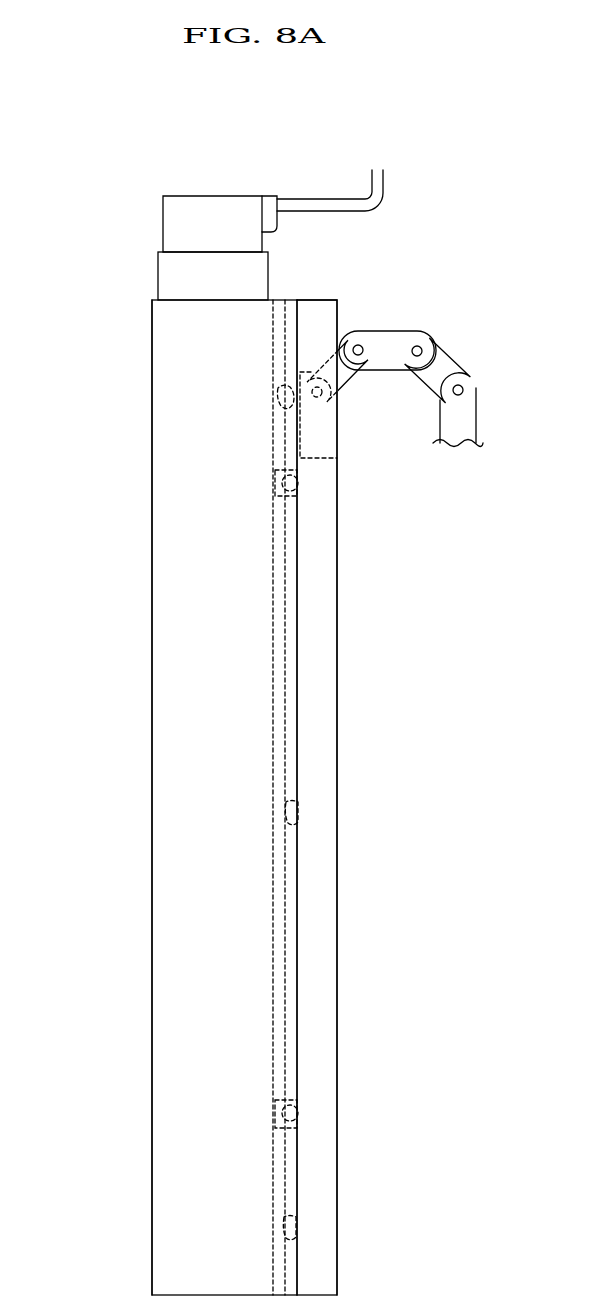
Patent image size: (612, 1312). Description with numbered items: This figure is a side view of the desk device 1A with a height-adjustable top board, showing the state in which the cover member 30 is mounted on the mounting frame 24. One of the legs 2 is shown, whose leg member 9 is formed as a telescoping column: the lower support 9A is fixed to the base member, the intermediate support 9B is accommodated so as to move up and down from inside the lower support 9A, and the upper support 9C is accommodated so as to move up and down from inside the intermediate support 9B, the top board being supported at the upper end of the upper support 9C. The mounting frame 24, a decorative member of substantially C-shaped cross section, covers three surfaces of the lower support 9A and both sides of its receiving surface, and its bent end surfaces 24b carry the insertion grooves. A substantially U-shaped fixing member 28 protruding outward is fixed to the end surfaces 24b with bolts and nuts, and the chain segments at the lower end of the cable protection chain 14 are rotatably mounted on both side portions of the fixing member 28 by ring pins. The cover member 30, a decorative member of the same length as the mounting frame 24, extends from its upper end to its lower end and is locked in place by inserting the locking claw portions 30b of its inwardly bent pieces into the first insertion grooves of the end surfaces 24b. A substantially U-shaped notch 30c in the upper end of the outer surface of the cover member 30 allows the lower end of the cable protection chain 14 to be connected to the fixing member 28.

The desk device 1A is at (440, 196).
The legs 2 is at (150, 691).
The drive unit 9 is at (128, 240).
The lower support 9A is at (160, 497).
The intermediate support 9B is at (158, 281).
The upper support 9C is at (163, 210).
The cable protection chain 14 is at (448, 355).
The mounting frame 24 is at (152, 566).
The end surfaces 24b is at (297, 565).
The fixing member 28 is at (327, 438).
The cover member 30 is at (338, 656).
The locking claw portion 30b is at (283, 397).
The notch 30c is at (338, 310).